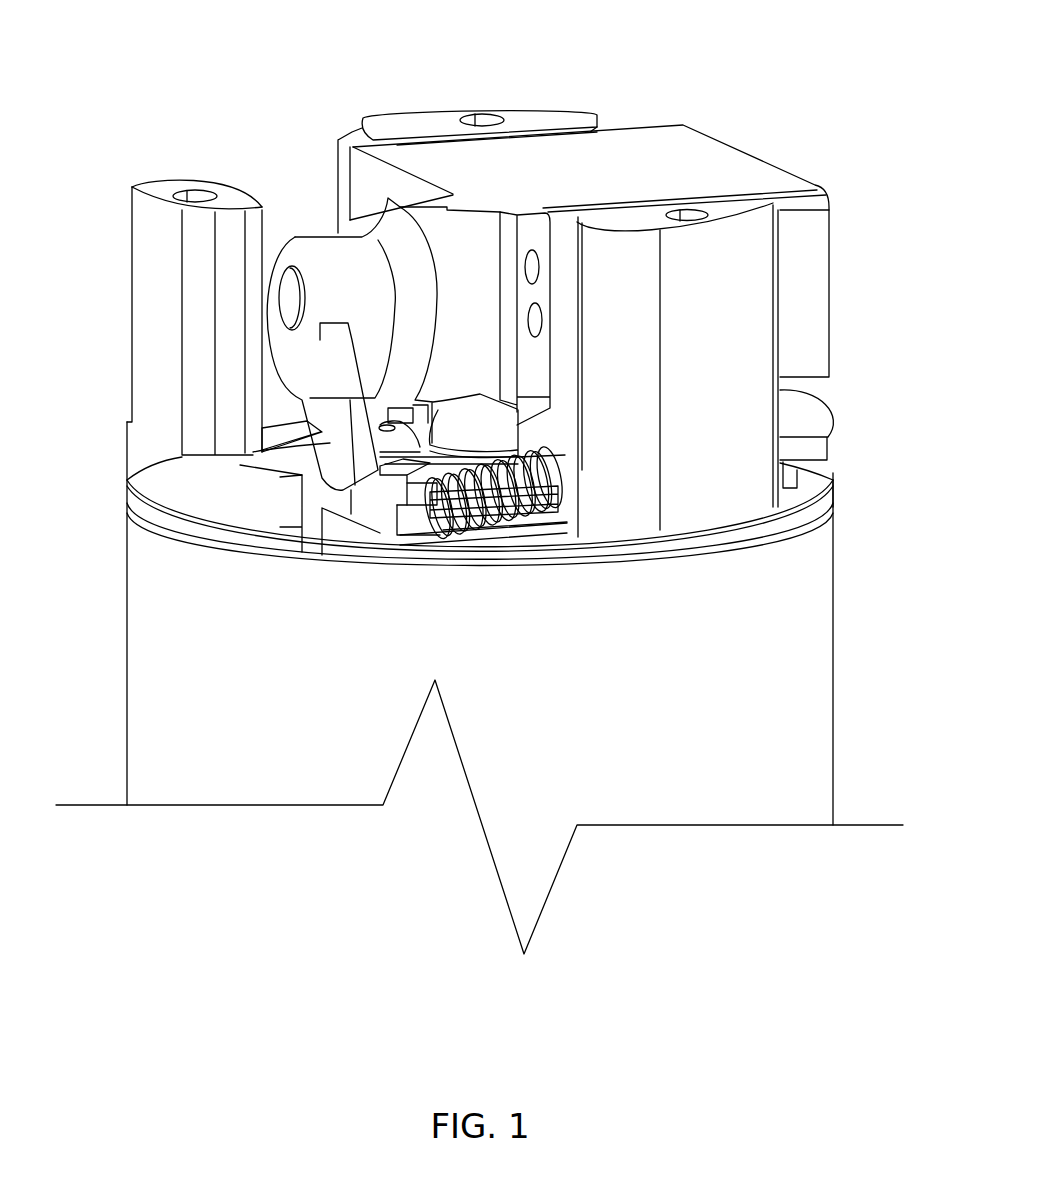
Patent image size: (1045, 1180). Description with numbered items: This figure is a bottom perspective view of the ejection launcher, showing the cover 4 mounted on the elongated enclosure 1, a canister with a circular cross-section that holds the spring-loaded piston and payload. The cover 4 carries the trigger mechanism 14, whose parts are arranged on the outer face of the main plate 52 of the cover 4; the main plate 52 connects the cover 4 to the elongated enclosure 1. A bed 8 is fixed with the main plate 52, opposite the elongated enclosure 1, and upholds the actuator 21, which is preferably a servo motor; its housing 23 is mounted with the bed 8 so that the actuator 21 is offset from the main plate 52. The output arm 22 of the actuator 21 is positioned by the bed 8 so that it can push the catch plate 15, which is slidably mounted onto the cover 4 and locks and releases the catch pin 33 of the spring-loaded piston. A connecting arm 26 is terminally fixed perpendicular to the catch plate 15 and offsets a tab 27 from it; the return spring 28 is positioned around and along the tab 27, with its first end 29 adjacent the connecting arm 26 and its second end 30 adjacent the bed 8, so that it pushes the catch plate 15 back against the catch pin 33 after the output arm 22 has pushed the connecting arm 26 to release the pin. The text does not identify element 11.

The elongated enclosure 1 is at (842, 600).
The cover 4 is at (845, 490).
The bed 8 is at (108, 321).
The base plate 11 is at (573, 495).
The trigger mechanism 14 is at (855, 298).
The catch plate 15 is at (298, 438).
The actuator 21 is at (777, 168).
The output arm 22 is at (323, 248).
The housing 23 is at (672, 126).
The connecting arm 26 is at (392, 522).
The tab 27 is at (452, 528).
The return spring 28 is at (560, 530).
The first end 29 is at (473, 533).
The second end 30 is at (562, 512).
The catch pin 33 is at (520, 435).
The main plate 52 is at (727, 545).